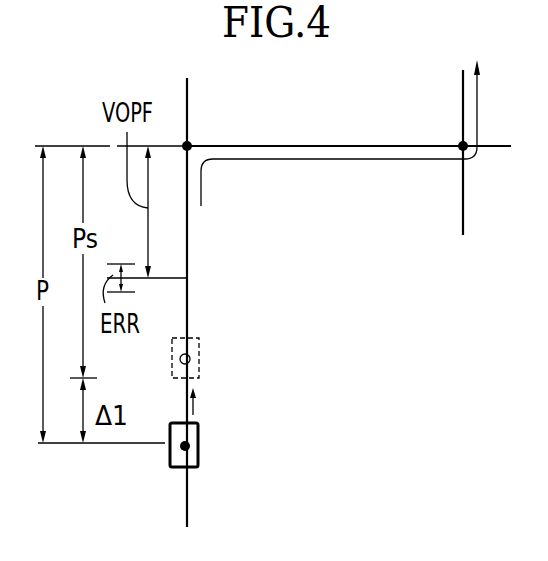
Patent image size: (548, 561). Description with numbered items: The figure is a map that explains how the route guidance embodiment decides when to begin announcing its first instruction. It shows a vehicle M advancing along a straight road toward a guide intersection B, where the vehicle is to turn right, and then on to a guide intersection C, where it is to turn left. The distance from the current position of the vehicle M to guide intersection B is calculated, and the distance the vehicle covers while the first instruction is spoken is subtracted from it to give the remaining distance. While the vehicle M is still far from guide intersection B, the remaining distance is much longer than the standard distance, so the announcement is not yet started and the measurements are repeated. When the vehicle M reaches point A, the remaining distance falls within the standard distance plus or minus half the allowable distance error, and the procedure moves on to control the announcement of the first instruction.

The point A is at (190, 354).
The guide intersection B is at (190, 144).
The guide intersection C is at (460, 143).
The vehicle M is at (198, 443).